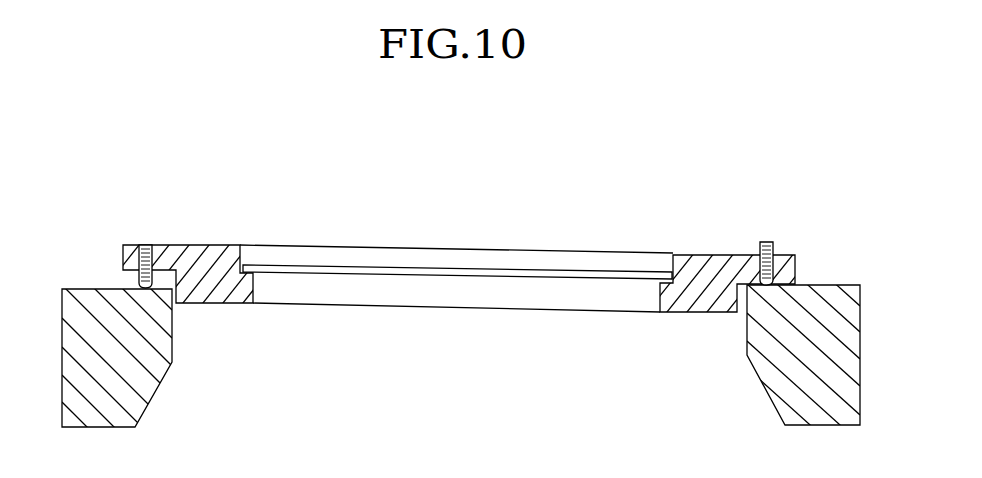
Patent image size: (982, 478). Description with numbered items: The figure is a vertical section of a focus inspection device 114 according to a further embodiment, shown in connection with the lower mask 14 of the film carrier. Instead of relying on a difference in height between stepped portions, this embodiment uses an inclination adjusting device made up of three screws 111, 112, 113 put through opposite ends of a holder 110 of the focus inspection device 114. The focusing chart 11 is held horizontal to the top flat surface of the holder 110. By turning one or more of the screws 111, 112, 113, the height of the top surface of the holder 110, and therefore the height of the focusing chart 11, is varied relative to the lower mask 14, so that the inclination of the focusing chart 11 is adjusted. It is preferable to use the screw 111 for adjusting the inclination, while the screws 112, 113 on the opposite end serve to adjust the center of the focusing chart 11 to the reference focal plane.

The focusing chart 11 is at (318, 267).
The lower mask 14 is at (94, 283).
The holder 110 is at (692, 254).
The screw 111 is at (147, 244).
The screw 112 is at (828, 226).
The screw 113 is at (768, 241).
The focus inspection device 114 is at (202, 237).